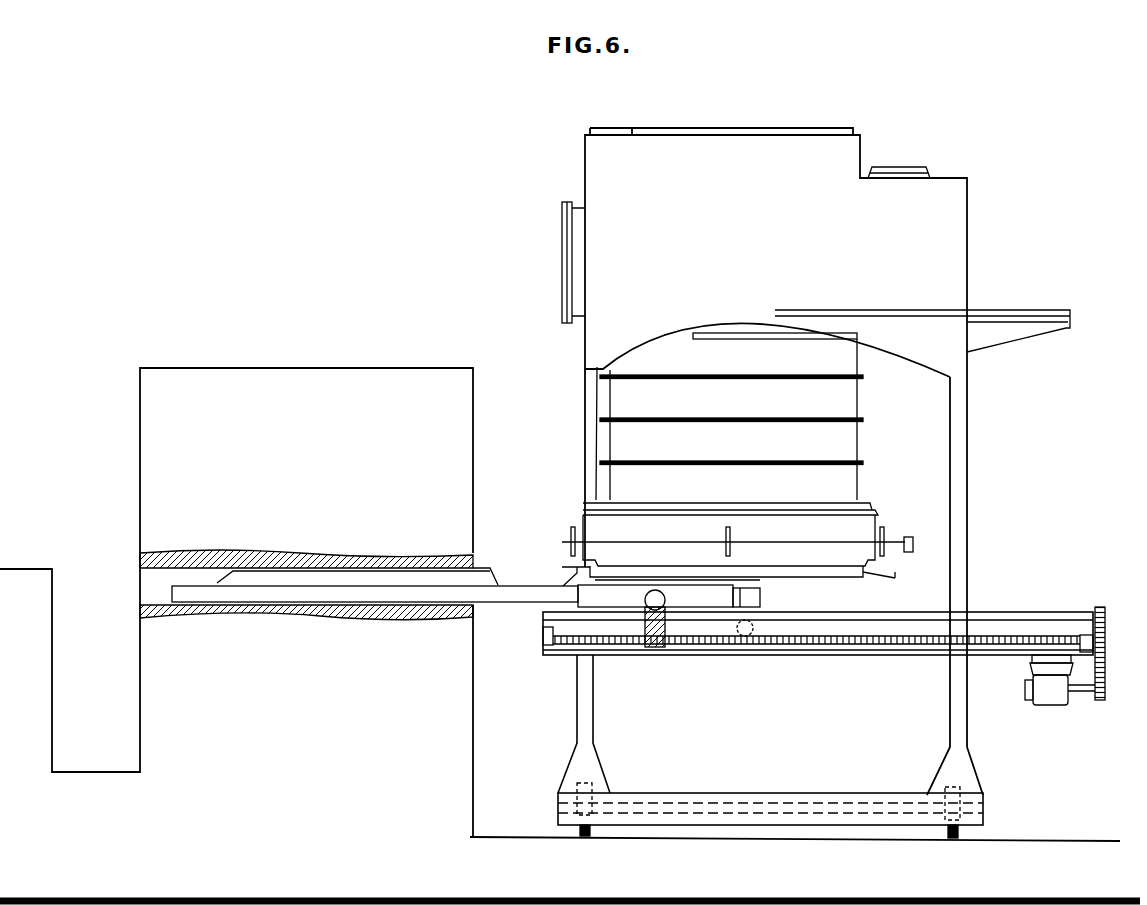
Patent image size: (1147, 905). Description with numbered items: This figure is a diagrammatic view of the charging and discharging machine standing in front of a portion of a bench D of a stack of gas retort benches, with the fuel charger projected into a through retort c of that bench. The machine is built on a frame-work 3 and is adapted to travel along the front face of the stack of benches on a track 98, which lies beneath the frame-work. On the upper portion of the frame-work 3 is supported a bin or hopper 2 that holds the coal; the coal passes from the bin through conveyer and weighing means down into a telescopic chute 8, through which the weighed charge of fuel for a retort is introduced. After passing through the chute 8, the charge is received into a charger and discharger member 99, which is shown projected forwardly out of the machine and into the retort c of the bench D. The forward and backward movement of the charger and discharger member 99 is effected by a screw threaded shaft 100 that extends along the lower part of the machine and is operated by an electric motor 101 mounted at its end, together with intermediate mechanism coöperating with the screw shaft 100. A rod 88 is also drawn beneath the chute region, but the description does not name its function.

The bin or hopper 2 is at (722, 152).
The frame-work 3 is at (960, 423).
The chute 8 is at (848, 403).
The connecting rod 88 is at (918, 536).
The track 98 is at (580, 830).
The charger and discharger member 99 is at (393, 592).
The screw threaded shaft 100 is at (865, 645).
The electric motor 101 is at (1042, 697).
The through retort C is at (178, 572).
The bench D is at (236, 587).